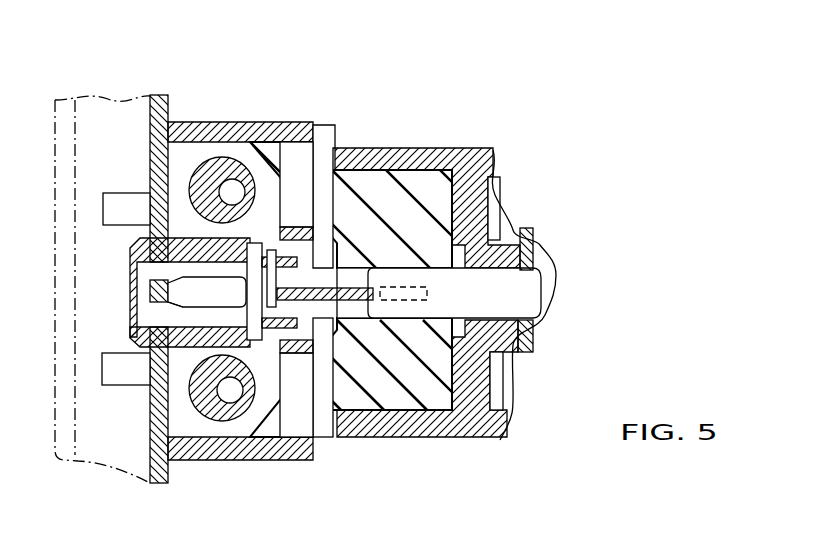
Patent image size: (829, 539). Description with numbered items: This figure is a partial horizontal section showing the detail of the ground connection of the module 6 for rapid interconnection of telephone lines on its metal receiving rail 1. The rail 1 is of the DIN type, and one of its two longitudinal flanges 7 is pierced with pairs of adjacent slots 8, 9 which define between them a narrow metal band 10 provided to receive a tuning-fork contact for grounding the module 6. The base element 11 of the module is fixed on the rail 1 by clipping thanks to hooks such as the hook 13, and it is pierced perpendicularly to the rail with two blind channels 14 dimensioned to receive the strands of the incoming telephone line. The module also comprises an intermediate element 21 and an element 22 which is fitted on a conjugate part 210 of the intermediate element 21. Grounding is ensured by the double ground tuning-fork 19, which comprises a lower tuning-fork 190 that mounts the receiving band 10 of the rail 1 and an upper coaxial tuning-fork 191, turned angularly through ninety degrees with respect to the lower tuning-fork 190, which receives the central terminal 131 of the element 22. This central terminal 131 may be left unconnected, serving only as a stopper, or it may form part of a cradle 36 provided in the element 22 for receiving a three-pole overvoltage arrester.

The metal rail 1 is at (107, 107).
The module 6 is at (580, 180).
The longitudinal flange 7 is at (167, 109).
The slot 8 is at (138, 348).
The slot 9 is at (138, 234).
The narrow metal band 10 is at (151, 293).
The base element 11 is at (240, 103).
The hook 13 is at (104, 198).
The blind channel 14 is at (226, 191).
The double ground tuning-fork 19 is at (314, 258).
The intermediate element 21 is at (325, 130).
The element 22 is at (497, 441).
The cradle 36 is at (540, 246).
The central terminal 131 is at (528, 296).
The lower tuning-fork 190 is at (180, 312).
The upper tuning-fork 191 is at (402, 290).
The conjugate part 210 is at (388, 398).